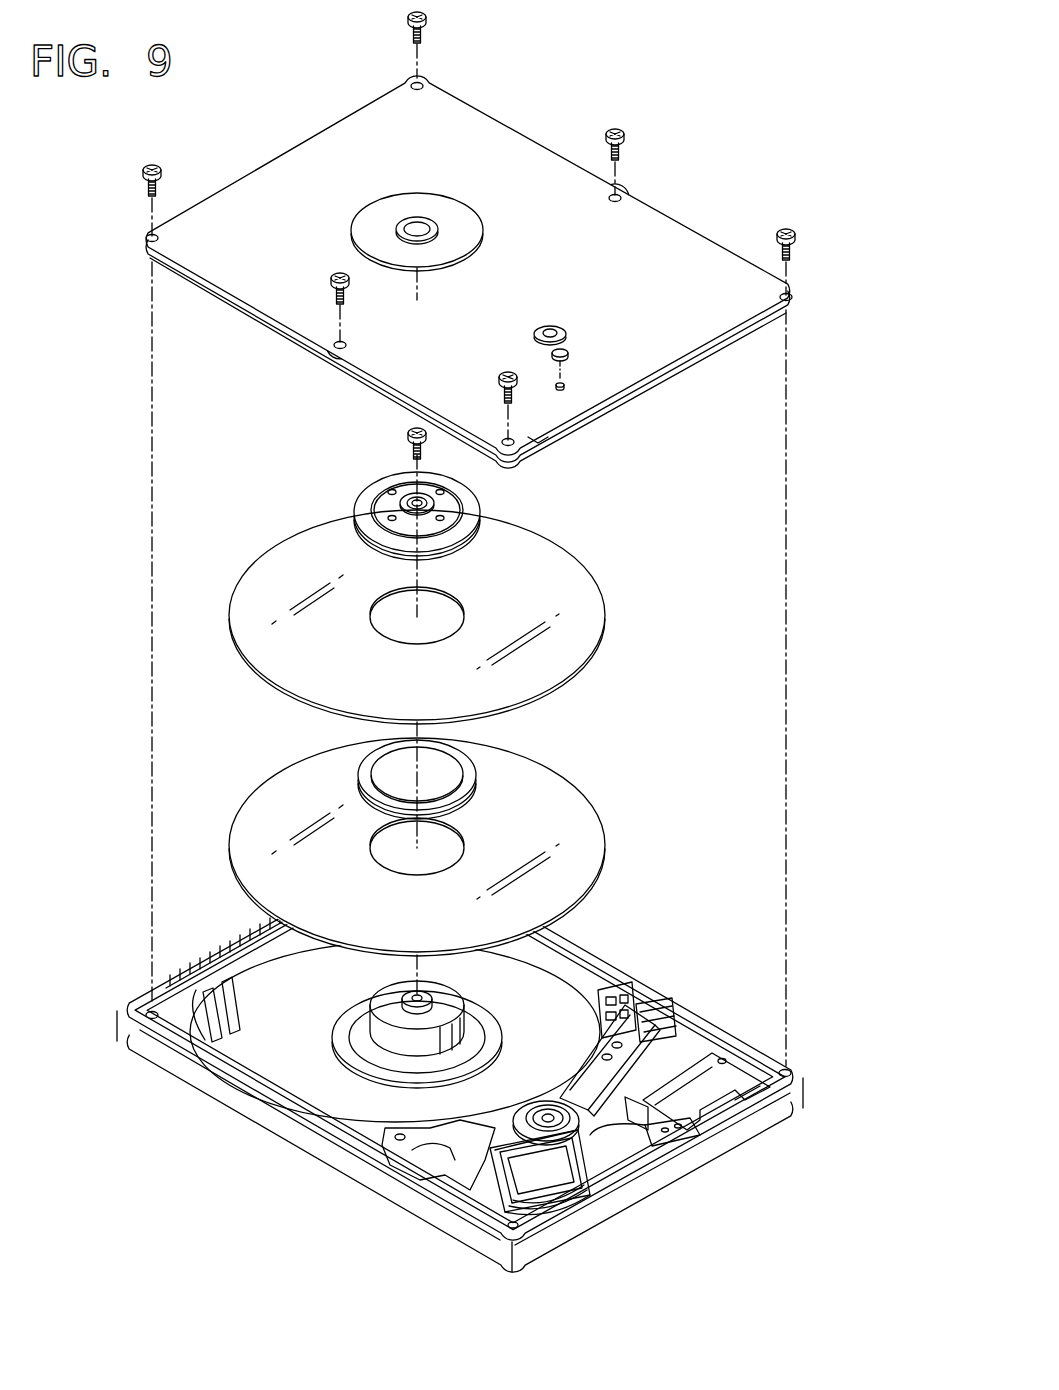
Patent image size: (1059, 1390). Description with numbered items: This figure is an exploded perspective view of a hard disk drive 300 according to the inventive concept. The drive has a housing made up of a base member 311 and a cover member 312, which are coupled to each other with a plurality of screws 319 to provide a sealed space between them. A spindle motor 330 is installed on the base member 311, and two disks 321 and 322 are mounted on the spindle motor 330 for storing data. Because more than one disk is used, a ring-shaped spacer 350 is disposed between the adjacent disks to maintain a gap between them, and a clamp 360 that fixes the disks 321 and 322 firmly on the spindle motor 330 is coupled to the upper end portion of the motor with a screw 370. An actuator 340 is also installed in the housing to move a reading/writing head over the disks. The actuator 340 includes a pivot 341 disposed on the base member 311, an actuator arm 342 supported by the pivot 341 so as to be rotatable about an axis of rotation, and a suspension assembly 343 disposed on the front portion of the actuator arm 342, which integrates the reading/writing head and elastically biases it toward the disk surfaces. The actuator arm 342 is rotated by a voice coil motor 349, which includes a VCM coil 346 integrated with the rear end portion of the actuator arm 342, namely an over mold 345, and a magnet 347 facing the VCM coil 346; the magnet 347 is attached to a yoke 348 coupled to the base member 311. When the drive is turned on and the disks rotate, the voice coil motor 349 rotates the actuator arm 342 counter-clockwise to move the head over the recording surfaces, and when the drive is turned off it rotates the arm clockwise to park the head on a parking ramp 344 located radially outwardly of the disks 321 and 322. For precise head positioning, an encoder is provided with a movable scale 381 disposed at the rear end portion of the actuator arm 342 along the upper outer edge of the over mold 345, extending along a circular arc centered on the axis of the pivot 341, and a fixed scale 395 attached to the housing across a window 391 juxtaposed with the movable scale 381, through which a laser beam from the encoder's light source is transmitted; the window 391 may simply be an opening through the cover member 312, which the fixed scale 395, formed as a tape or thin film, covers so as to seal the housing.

The hard disk drive 300 is at (676, 104).
The base member 311 is at (720, 1148).
The cover member 312 is at (694, 246).
The screws 319 is at (789, 222).
The disk 321 is at (537, 556).
The disk 322 is at (588, 807).
The spindle motor 330 is at (370, 1053).
The actuator 340 is at (672, 1050).
The pivot 341 is at (546, 1116).
The actuator arm 342 is at (576, 1076).
The suspension assembly 343 is at (640, 1002).
The parking ramp 344 is at (607, 990).
The over mold 345 is at (580, 1165).
The VCM coil 346 is at (520, 1196).
The magnet 347 is at (478, 1186).
The yoke 348 is at (412, 1160).
The voice coil motor 349 is at (471, 1305).
The spacer 350 is at (473, 773).
The clamp 360 is at (348, 489).
The screw 370 is at (408, 432).
The movable scale 381 is at (580, 1172).
The window 391 is at (570, 384).
The fixed scale 395 is at (572, 352).